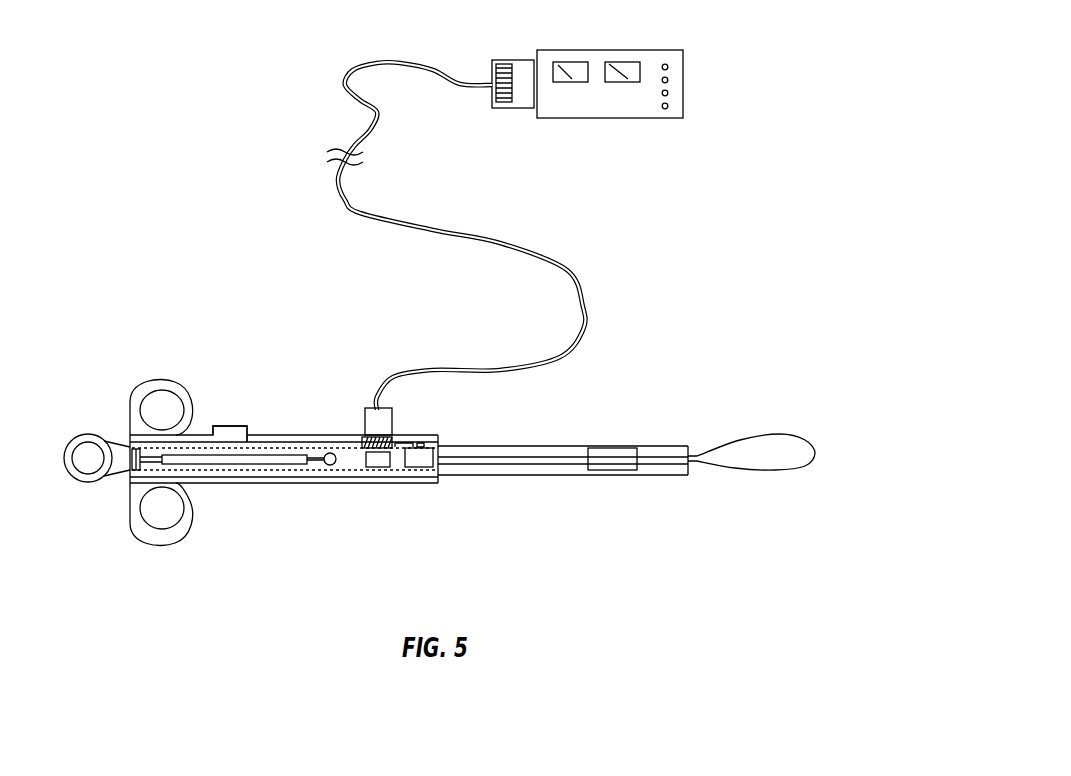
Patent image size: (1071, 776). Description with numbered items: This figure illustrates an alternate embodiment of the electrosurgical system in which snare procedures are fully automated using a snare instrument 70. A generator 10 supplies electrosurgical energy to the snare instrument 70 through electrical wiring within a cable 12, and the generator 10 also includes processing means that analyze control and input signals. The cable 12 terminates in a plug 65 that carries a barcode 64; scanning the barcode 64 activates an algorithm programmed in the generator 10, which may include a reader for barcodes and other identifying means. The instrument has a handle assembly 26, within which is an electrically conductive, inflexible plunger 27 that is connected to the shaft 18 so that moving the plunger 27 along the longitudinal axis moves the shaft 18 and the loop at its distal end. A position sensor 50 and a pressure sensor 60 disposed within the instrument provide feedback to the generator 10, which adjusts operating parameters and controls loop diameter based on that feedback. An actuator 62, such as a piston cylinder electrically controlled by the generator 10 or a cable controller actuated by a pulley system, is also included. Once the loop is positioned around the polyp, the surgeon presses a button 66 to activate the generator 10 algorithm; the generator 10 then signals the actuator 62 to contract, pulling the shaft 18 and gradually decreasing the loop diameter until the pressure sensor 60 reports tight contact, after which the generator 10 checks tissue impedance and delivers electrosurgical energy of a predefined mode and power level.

The generator 10 is at (635, 50).
The cable 12 is at (352, 68).
The shaft 18 is at (545, 455).
The handle assembly 26 is at (297, 435).
The plunger 27 is at (382, 468).
The position sensor 50 is at (392, 445).
The pressure sensor 60 is at (423, 453).
The actuator 62 is at (252, 466).
The barcode 64 is at (513, 108).
The plug 65 is at (513, 63).
The button 66 is at (233, 425).
The snare instrument 70 is at (576, 401).